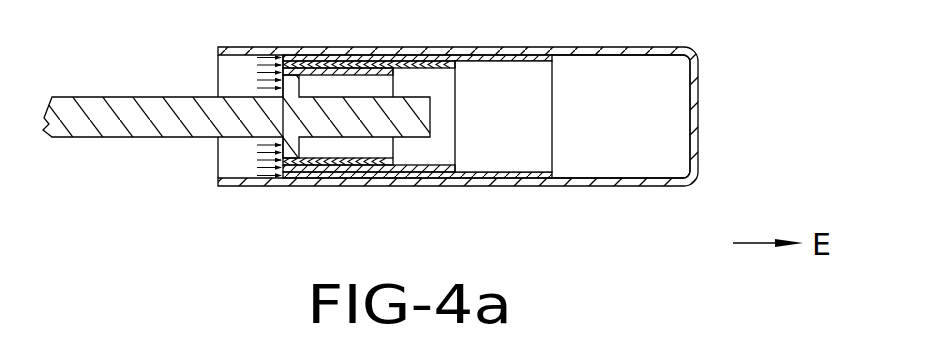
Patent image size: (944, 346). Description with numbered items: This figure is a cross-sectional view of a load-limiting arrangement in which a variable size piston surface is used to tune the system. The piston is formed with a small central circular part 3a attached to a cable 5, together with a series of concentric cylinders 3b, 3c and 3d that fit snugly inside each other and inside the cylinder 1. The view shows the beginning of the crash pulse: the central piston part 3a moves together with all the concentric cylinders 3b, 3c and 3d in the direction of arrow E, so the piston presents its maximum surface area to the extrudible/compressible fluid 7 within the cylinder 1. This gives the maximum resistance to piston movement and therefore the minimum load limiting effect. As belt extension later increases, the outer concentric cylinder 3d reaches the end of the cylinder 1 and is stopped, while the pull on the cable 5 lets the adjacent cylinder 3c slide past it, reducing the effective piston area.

The cylinder 1 is at (600, 180).
The central circular part 3a is at (293, 145).
The concentric cylinder 3b is at (356, 160).
The concentric cylinder 3c is at (432, 168).
The outer concentric cylinder 3d is at (517, 172).
The cable 5 is at (172, 127).
The extrudible/compressible fluid 7 is at (657, 155).